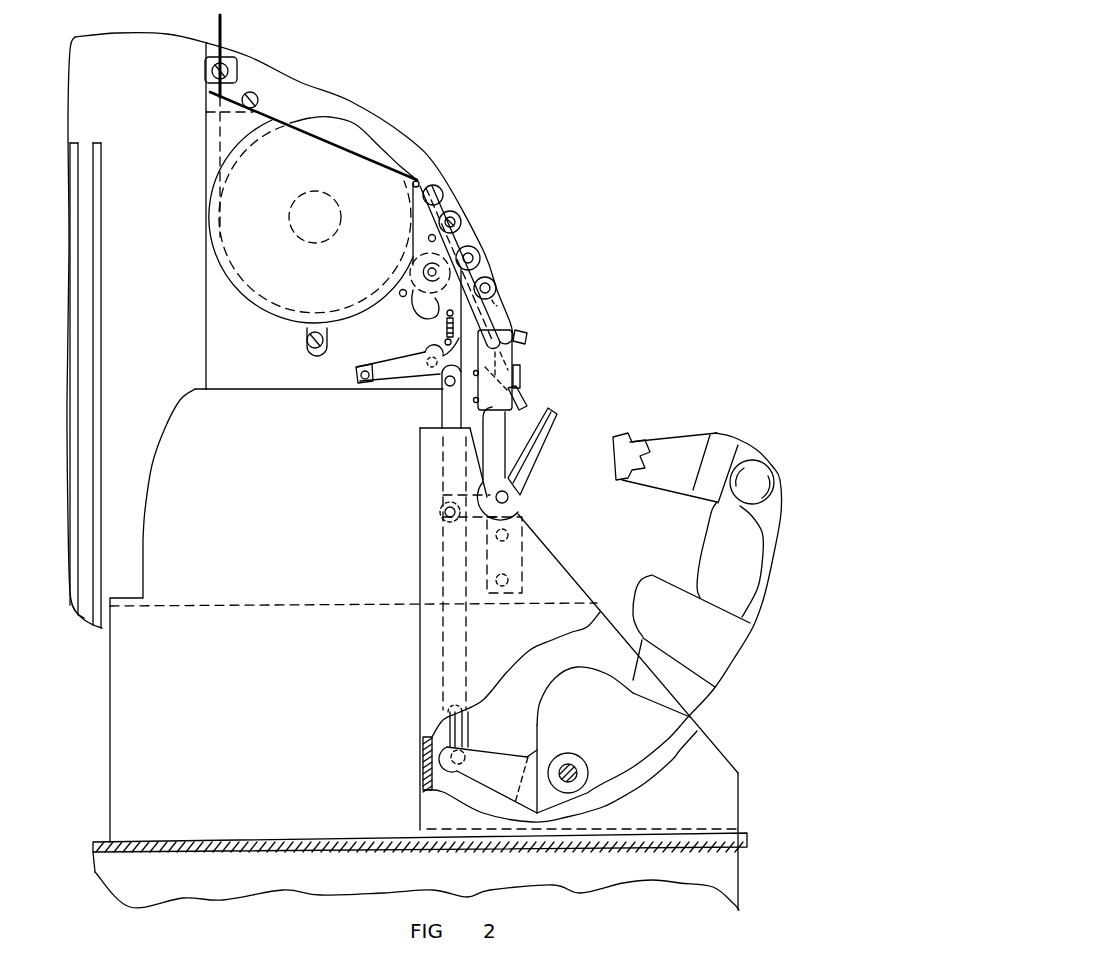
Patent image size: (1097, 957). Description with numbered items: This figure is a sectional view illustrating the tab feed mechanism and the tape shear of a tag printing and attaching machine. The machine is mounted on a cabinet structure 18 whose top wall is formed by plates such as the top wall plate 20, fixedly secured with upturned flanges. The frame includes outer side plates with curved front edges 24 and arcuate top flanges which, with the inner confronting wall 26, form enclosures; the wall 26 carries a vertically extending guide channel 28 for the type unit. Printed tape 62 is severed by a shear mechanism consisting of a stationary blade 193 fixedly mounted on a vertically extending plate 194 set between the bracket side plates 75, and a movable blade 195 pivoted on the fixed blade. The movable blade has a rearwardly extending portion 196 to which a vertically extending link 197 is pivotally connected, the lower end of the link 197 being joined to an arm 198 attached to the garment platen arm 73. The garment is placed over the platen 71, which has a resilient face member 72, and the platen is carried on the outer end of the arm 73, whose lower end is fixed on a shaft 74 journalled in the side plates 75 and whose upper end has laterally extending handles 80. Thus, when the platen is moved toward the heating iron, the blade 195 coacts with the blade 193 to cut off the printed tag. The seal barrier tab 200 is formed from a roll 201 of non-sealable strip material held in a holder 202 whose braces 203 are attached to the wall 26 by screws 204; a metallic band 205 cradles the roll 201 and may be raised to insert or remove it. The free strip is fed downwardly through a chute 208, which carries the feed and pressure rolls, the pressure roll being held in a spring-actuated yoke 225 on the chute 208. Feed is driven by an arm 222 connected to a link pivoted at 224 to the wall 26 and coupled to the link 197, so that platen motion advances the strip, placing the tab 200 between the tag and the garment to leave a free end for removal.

The cabinet structure 18 is at (416, 880).
The top wall plate 20 is at (310, 841).
The front edge 24 is at (393, 132).
The inner confronting wall 26 is at (332, 428).
The guide channel 28 is at (87, 218).
The tape 62 is at (497, 458).
The platen 71 is at (638, 452).
The resilient face member 72 is at (620, 430).
The arm 73 is at (603, 627).
The shaft 74 is at (577, 768).
The side plate 75 is at (560, 740).
The handle 80 is at (760, 473).
The stationary blade 193 is at (515, 438).
The vertically extending plate 194 is at (552, 572).
The movable blade 195 is at (548, 428).
The rearwardly extending portion 196 is at (443, 495).
The link 197 is at (443, 412).
The arm 198 is at (488, 780).
The tab 200 is at (523, 433).
The roll 201 is at (342, 132).
The holder 202 is at (311, 221).
The brace 203 is at (307, 327).
The screw 204 is at (257, 102).
The metallic band 205 is at (223, 153).
The chute 208 is at (455, 240).
The arm 222 is at (443, 330).
The pivot 224 is at (368, 382).
The yoke 225 is at (485, 270).